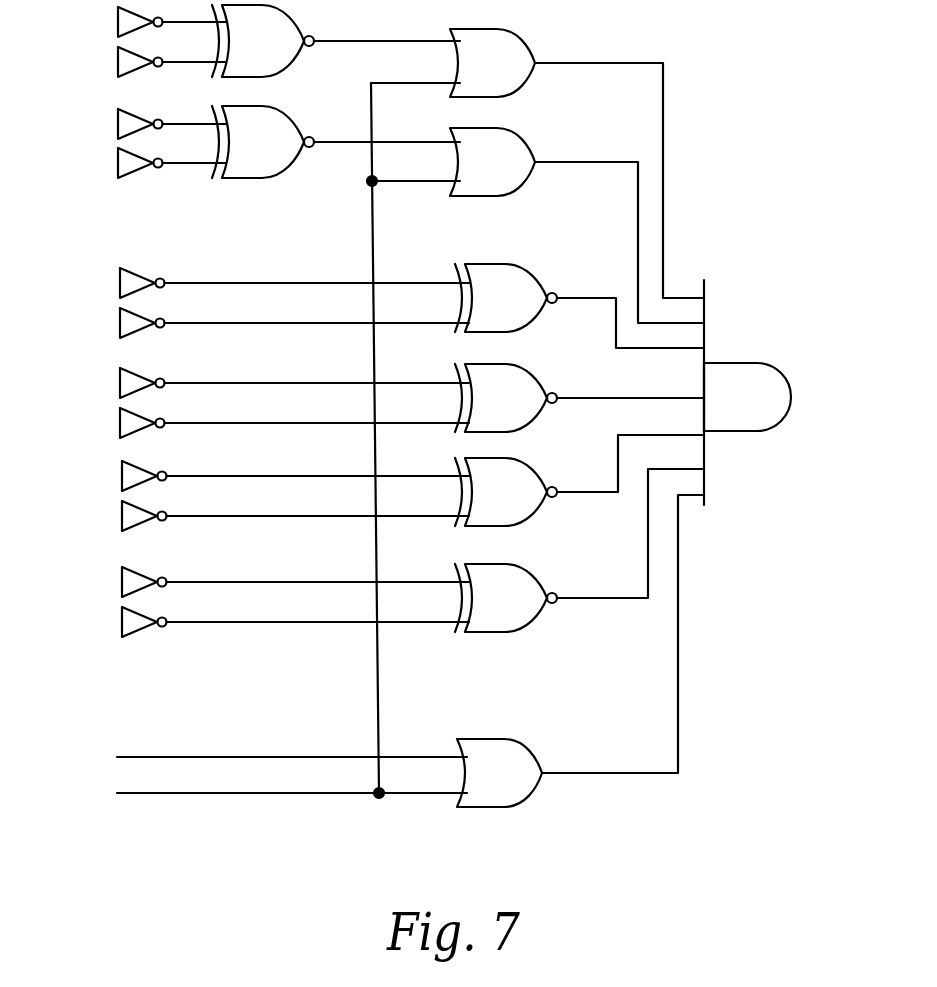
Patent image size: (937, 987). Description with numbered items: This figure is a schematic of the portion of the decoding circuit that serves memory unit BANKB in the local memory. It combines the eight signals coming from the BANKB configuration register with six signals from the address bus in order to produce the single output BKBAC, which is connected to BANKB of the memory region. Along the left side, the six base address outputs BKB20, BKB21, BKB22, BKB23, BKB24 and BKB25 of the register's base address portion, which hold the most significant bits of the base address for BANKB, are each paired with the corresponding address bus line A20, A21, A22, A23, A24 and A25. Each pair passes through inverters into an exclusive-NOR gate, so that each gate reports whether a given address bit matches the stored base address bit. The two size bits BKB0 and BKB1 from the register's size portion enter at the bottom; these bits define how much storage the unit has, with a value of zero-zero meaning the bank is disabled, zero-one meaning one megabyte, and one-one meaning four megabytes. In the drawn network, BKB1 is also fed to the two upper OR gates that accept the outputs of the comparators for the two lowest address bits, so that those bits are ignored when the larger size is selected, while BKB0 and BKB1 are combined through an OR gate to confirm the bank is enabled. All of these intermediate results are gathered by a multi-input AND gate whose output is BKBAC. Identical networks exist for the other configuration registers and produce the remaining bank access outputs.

The base address output bit BKB20 is at (118, 22).
The address bus line A20 is at (118, 62).
The base address output bit BKB21 is at (118, 124).
The address bus line A21 is at (118, 163).
The base address output bit BKB22 is at (120, 283).
The address bus line A22 is at (120, 323).
The base address output bit BKB23 is at (120, 383).
The address bus line A23 is at (120, 423).
The base address output bit BKB24 is at (122, 476).
The address bus line A24 is at (122, 516).
The base address output bit BKB25 is at (122, 582).
The address bus line A25 is at (122, 622).
The size bit output BKB0 is at (257, 758).
The size bit output BKB1 is at (257, 797).
The bank access output BKBAC is at (791, 397).